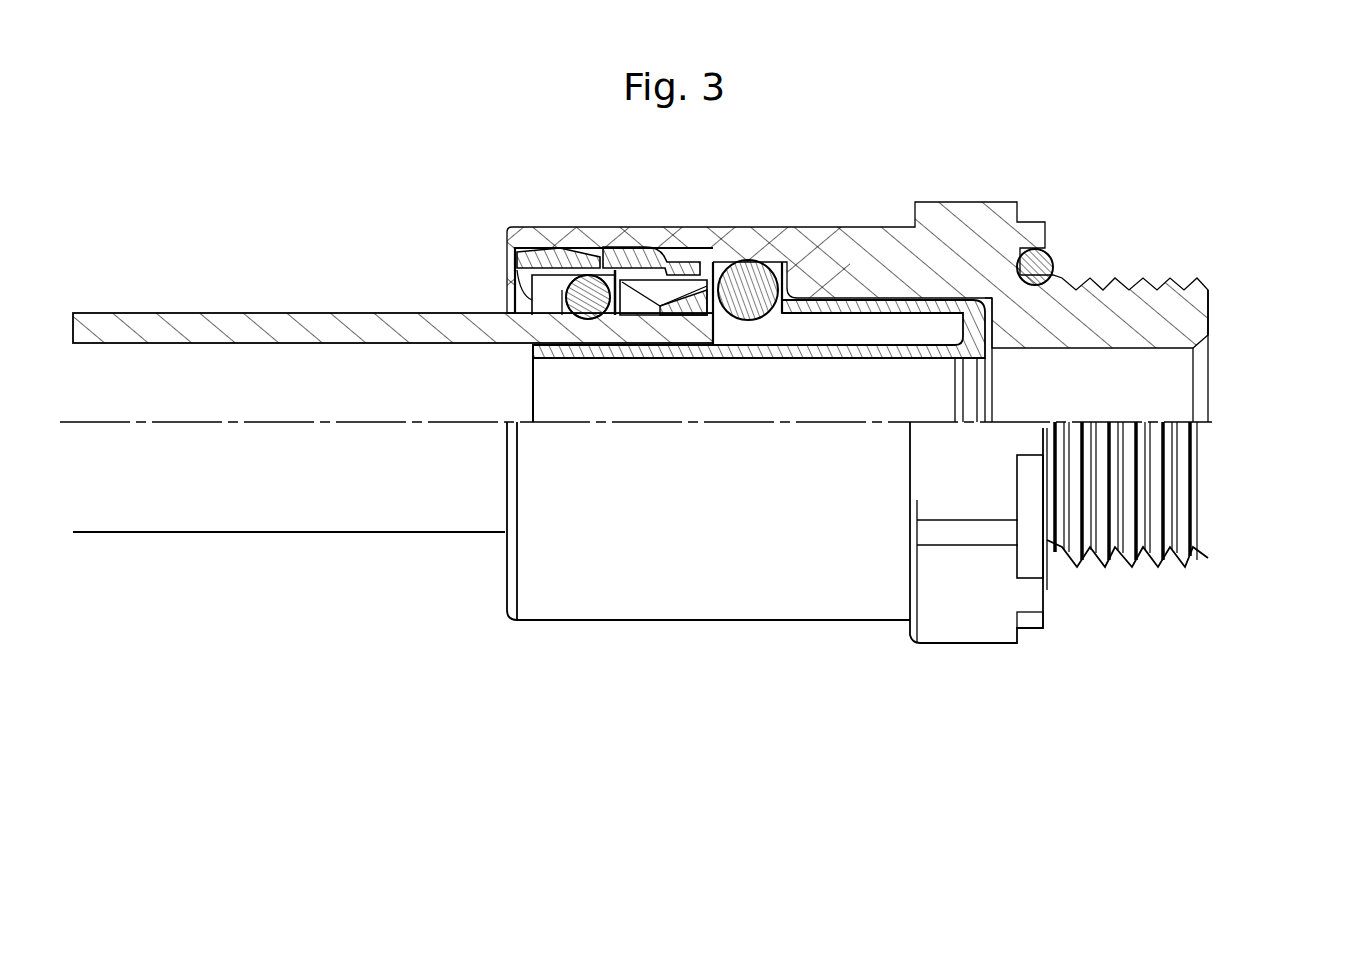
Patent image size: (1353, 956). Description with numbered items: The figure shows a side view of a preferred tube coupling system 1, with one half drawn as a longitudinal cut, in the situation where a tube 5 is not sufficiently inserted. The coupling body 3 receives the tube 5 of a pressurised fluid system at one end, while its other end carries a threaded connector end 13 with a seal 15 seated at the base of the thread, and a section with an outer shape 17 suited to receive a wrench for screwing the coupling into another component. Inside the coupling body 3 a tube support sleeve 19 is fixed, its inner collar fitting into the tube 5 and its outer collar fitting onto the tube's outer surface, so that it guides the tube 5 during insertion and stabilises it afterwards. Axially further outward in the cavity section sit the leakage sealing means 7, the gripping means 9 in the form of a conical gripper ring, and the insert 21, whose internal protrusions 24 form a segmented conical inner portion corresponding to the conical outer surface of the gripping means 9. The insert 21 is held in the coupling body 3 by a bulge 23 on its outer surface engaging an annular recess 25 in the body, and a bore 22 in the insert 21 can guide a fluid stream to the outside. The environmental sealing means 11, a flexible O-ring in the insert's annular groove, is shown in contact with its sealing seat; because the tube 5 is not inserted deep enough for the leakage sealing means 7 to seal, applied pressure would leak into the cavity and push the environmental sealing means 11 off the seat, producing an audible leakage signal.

The tube coupling system 1 is at (1218, 252).
The coupling body 3 is at (938, 238).
The tube 5 is at (345, 330).
The leakage sealing means 7 is at (737, 255).
The gripping means 9 is at (545, 248).
The environmental sealing means 11 is at (535, 287).
The threaded connector end 13 is at (1117, 513).
The seal 15 is at (1005, 268).
The outer shape 17 is at (952, 613).
The tube support sleeve 19 is at (855, 300).
The insert 21 is at (598, 272).
The bore 22 is at (522, 270).
The bulge 23 is at (612, 250).
The internal protrusions 24 is at (667, 270).
The annular recess 25 is at (647, 247).